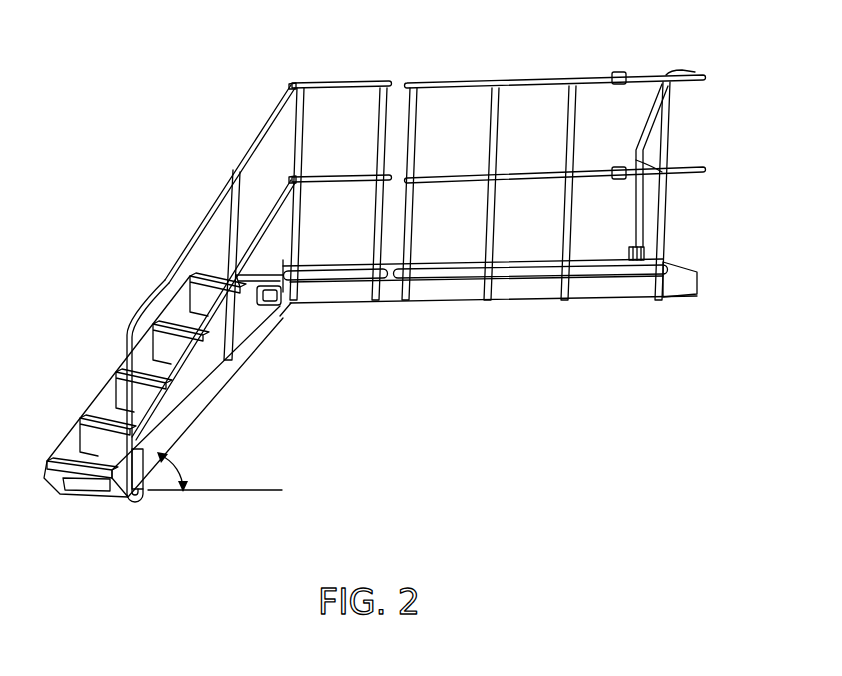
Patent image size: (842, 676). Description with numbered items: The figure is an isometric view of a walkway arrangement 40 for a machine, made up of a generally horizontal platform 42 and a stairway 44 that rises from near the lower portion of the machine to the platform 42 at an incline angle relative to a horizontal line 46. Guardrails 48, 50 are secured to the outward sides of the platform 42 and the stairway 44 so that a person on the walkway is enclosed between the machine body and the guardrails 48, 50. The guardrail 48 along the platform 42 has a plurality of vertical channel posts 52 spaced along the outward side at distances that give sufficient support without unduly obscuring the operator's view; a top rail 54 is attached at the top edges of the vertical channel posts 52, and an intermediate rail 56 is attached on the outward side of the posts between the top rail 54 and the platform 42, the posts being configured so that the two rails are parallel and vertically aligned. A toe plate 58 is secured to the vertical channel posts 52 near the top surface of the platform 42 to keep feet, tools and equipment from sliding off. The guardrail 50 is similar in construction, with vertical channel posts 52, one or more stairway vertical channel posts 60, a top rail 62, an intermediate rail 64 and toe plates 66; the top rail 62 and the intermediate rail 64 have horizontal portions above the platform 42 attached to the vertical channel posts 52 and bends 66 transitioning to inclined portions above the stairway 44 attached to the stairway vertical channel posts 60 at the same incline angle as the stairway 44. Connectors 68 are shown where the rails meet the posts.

The walkway arrangement 40 is at (144, 177).
The platform 42 is at (697, 287).
The stairway 44 is at (200, 396).
The horizontal line 46 is at (250, 490).
The guardrail 48 is at (600, 78).
The guardrail 50 is at (157, 286).
The vertical channel posts 52 is at (374, 132).
The top rail 54 is at (533, 80).
The intermediate rail 56 is at (683, 173).
The toe plate 58 is at (527, 270).
The stairway vertical channel post 60 is at (232, 203).
The top rail 62 is at (266, 125).
The intermediate rail 64 is at (330, 183).
The toe plates 66 is at (333, 274).
The rail connectors 68 is at (292, 85).